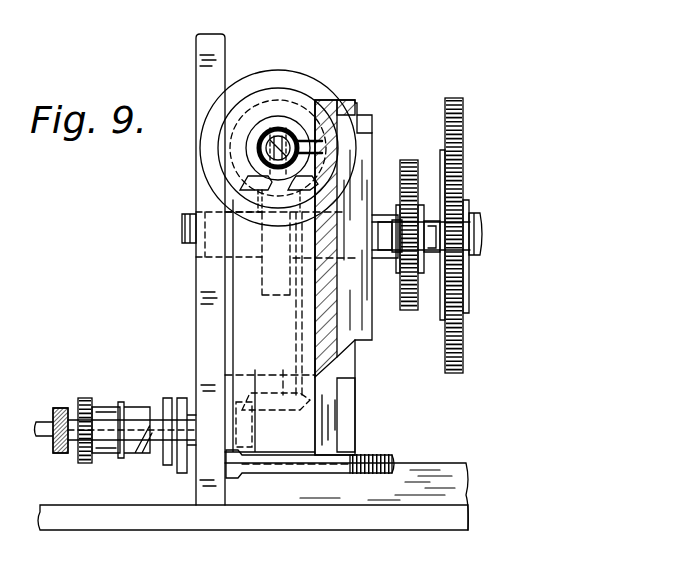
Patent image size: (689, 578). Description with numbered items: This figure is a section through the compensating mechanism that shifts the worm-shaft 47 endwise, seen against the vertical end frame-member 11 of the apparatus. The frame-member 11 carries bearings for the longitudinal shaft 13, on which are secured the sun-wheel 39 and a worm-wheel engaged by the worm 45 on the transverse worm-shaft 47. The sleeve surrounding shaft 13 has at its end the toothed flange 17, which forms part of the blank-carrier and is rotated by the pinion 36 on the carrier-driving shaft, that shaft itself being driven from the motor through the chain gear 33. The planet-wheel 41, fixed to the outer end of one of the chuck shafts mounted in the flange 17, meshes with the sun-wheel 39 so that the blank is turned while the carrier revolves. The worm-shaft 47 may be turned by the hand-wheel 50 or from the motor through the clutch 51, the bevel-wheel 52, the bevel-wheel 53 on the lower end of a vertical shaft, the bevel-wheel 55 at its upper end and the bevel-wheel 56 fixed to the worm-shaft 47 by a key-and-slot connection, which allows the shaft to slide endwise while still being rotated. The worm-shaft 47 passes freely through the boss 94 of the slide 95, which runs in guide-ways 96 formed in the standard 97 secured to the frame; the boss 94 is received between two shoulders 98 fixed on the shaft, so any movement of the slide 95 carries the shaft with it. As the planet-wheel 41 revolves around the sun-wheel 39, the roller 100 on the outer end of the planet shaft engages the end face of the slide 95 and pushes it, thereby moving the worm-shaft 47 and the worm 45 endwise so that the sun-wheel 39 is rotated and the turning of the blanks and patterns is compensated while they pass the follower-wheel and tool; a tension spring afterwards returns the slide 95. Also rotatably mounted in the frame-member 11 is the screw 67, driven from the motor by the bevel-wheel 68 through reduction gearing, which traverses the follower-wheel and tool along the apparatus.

The end frame-member 11 is at (199, 290).
The shaft 13 is at (182, 228).
The flange 17 is at (456, 375).
The chain gear 33 is at (60, 453).
The pinion 36 is at (467, 310).
The sun-wheel 39 is at (405, 306).
The planet-wheel 41 is at (356, 348).
The worm 45 is at (262, 128).
The worm-shaft 47 is at (286, 128).
The hand-wheel 50 is at (337, 100).
The clutch 51 is at (141, 405).
The bevel-wheel 52 is at (247, 462).
The bevel-wheel 53 is at (258, 402).
The bevel-wheel 55 is at (246, 166).
The bevel-wheel 56 is at (240, 126).
The screw 67 is at (383, 432).
The bevel-wheel 68 is at (87, 398).
The boss 94 is at (356, 108).
The slide 95 is at (378, 140).
The guide-ways 96 is at (372, 132).
The standard 97 is at (342, 402).
The shoulder 98 is at (240, 150).
The roller 100 is at (384, 200).